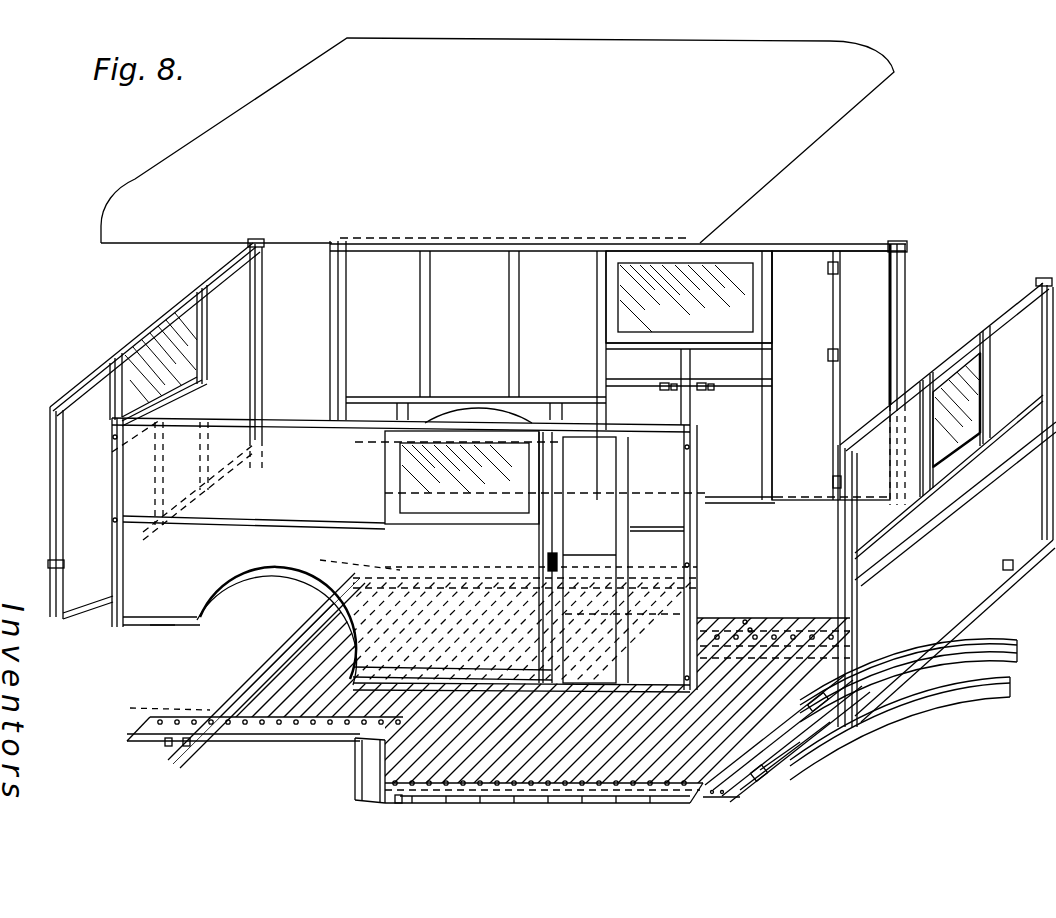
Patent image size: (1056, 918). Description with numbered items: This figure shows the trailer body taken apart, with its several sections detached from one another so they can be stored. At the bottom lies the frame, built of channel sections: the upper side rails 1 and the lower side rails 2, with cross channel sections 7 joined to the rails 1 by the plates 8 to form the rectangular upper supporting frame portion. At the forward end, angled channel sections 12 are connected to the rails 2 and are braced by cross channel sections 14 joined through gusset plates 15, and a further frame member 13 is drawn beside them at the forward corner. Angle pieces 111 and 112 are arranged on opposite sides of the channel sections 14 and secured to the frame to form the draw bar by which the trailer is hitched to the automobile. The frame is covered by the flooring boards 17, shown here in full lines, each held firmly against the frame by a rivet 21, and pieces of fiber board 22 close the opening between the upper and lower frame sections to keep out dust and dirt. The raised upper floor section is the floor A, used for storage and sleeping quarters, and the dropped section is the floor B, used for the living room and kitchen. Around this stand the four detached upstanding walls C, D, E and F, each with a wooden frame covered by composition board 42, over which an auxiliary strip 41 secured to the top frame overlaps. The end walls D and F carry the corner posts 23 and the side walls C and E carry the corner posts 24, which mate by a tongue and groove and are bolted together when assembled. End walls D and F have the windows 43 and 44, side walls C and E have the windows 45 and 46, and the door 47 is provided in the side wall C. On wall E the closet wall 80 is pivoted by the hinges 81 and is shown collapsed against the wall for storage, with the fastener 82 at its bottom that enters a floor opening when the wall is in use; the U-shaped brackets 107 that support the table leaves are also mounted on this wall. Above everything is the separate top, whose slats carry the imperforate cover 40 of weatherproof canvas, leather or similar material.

The cover 40 is at (240, 117).
The end wall D is at (136, 340).
The side wall E is at (800, 243).
The end wall F is at (1002, 322).
The side wall C is at (115, 612).
The upper floor section A is at (266, 655).
The lower floor section B is at (798, 764).
The corner post 23 is at (260, 288).
The corner post 24 is at (329, 318).
The composition board 42 is at (50, 565).
The auxiliary strip 41 is at (178, 617).
The window 43 is at (173, 330).
The window 44 is at (965, 442).
The window 45 is at (392, 479).
The window 46 is at (732, 272).
The door 47 is at (612, 533).
The upstanding wall 80 is at (810, 318).
The hinge 81 is at (839, 268).
The fastener 82 is at (780, 500).
The bracket 107 is at (700, 391).
The channel section 7 is at (273, 630).
The plate 8 is at (404, 633).
The side rail 1 is at (255, 734).
The side rail 2 is at (698, 800).
The flooring board 17 is at (198, 696).
The rivet 21 is at (186, 746).
The fiber board 22 is at (355, 775).
The channel section 12 is at (757, 782).
The rail 13 is at (722, 798).
The cross channel section 14 is at (838, 732).
The gusset plate 15 is at (808, 748).
The angle piece 111 is at (951, 699).
The angle piece 112 is at (990, 638).